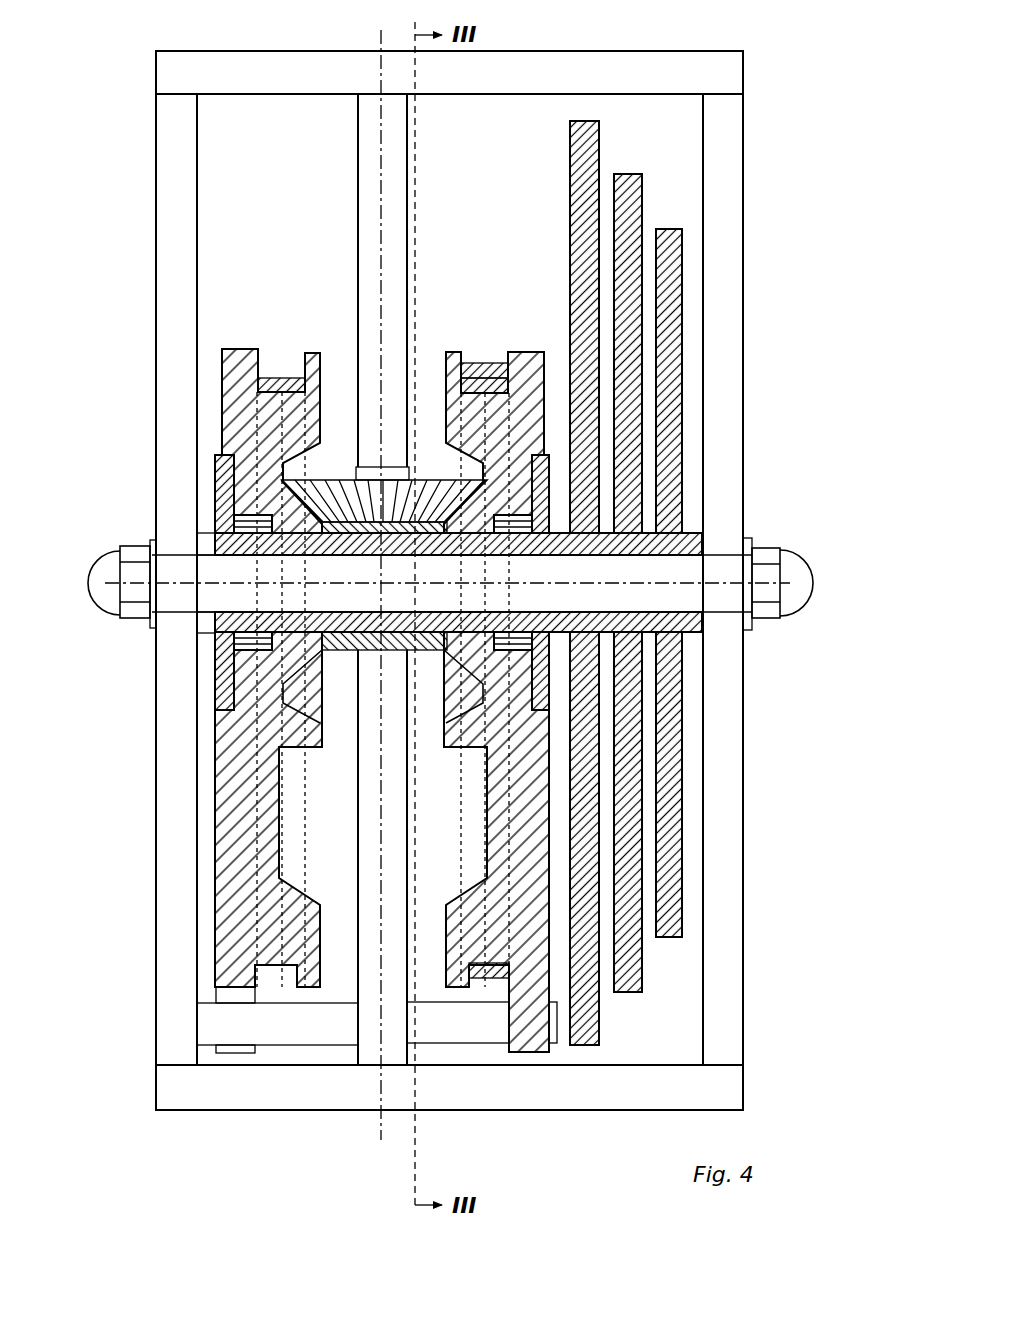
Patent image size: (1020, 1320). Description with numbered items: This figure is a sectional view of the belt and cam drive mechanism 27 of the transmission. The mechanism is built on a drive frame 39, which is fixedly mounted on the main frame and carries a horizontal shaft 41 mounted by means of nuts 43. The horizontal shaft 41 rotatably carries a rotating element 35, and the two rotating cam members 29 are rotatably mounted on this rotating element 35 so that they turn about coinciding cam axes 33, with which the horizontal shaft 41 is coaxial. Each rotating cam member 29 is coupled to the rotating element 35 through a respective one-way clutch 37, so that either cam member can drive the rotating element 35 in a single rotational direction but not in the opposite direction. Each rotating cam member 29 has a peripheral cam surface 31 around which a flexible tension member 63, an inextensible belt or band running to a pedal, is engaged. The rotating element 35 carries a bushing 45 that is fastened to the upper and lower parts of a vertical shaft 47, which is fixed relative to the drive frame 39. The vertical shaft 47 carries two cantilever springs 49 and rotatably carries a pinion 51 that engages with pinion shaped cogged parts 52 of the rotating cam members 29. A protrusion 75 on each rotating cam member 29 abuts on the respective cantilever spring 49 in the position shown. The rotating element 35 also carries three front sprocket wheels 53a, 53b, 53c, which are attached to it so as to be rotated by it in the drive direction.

The belt and cam drive mechanism 27 is at (126, 1134).
The rotating cam member 29 is at (218, 853).
The peripheral cam surface 31 is at (240, 982).
The cam axes 33 is at (230, 620).
The rotating element 35 is at (217, 478).
The one-way clutch 37 is at (235, 522).
The drive frame 39 is at (745, 1005).
The horizontal shaft 41 is at (680, 572).
The nut 43 is at (108, 592).
The bushing 45 is at (342, 650).
The vertical shaft 47 is at (360, 240).
The cantilever spring 49 is at (295, 1045).
The pinion 51 is at (335, 480).
The pinion shaped cogged part 52 is at (290, 690).
The front sprocket wheel 53a is at (598, 140).
The front sprocket wheel 53b is at (650, 158).
The front sprocket wheel 53c is at (662, 228).
The flexible tension member 63 is at (282, 380).
The protrusion 75 is at (238, 1053).